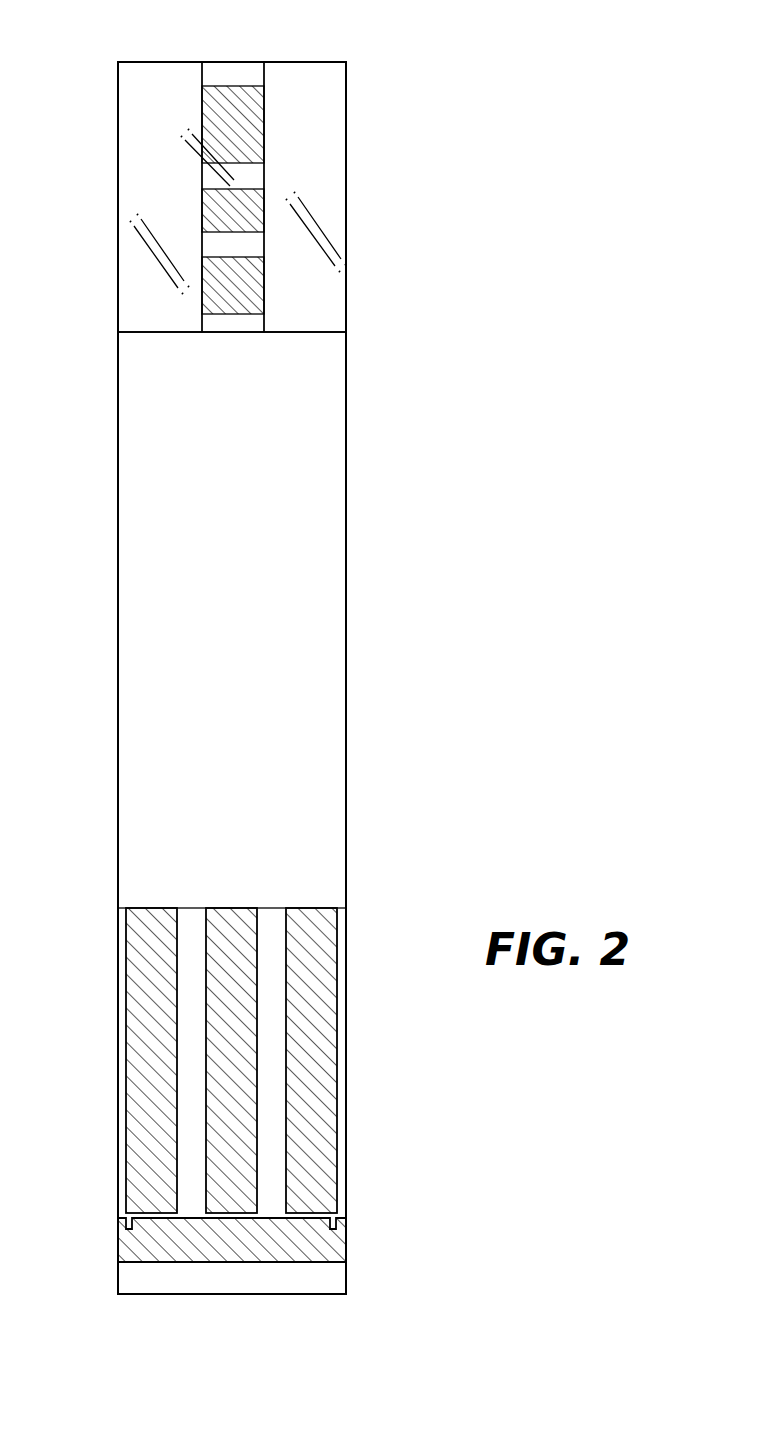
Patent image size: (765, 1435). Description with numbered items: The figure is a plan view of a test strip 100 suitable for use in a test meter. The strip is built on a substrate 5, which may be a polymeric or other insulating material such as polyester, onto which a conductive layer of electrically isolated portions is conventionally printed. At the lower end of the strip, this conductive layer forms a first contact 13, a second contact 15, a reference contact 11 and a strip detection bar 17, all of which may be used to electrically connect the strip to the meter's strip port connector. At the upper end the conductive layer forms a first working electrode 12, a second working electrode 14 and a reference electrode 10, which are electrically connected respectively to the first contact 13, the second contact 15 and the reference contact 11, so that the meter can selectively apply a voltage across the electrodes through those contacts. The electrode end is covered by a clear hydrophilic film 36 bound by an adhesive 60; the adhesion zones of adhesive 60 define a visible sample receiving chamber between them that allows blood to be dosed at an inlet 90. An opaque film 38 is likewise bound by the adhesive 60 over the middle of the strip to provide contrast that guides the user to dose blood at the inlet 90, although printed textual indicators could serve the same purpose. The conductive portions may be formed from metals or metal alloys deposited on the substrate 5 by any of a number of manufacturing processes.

The test strip 100 is at (448, 614).
The inlet 90 is at (238, 62).
The clear hydrophilic film 36 is at (299, 276).
The adhesive 60 is at (140, 148).
The reference electrode 10 is at (215, 122).
The first working electrode 12 is at (205, 205).
The second working electrode 14 is at (205, 305).
The opaque film 38 is at (330, 675).
The reference contact 11 is at (150, 1195).
The second contact 15 is at (233, 1193).
The first contact 13 is at (317, 1193).
The strip detection bar 17 is at (150, 1245).
The substrate 5 is at (148, 1283).